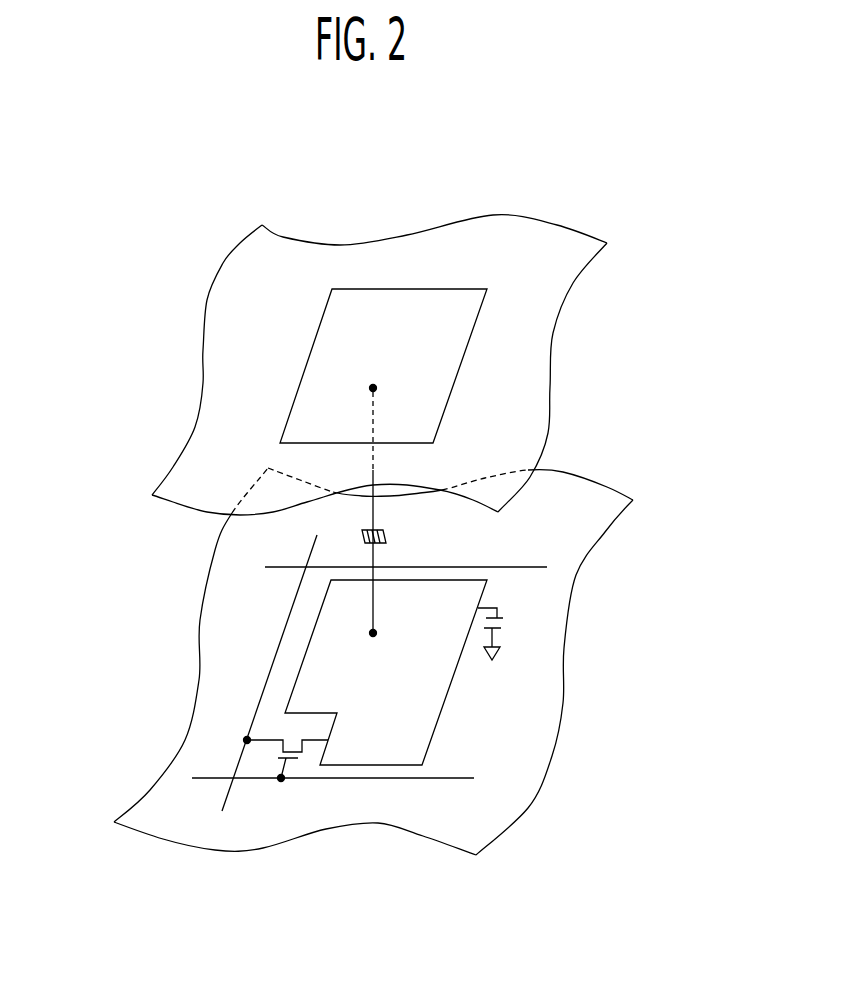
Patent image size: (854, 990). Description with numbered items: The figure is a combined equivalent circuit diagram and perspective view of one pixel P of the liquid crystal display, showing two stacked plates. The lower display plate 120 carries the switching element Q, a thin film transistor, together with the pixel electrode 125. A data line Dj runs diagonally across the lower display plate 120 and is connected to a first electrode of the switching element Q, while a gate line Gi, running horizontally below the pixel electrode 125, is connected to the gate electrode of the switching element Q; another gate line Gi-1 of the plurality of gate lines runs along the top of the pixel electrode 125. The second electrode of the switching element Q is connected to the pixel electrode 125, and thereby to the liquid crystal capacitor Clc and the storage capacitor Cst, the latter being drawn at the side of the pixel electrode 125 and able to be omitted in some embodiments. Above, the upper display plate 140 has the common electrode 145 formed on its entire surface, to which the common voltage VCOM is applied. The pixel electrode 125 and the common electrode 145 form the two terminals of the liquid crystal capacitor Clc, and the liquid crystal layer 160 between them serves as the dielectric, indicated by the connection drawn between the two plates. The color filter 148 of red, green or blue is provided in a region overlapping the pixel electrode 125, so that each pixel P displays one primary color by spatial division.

The pixel P is at (437, 158).
The lower display plate 120 is at (579, 648).
The pixel electrode 125 is at (441, 707).
The upper display plate 140 is at (567, 393).
The common electrode 145 is at (552, 343).
The color filter 148 is at (460, 380).
The liquid crystal layer 160 is at (131, 581).
The common voltage VCOM is at (615, 263).
The data line Dj is at (269, 667).
The gate line Gi is at (330, 764).
The gate line Gi-1 is at (392, 580).
The switching element Q is at (286, 759).
The liquid crystal capacitor Clc is at (388, 537).
The storage capacitor Cst is at (505, 634).